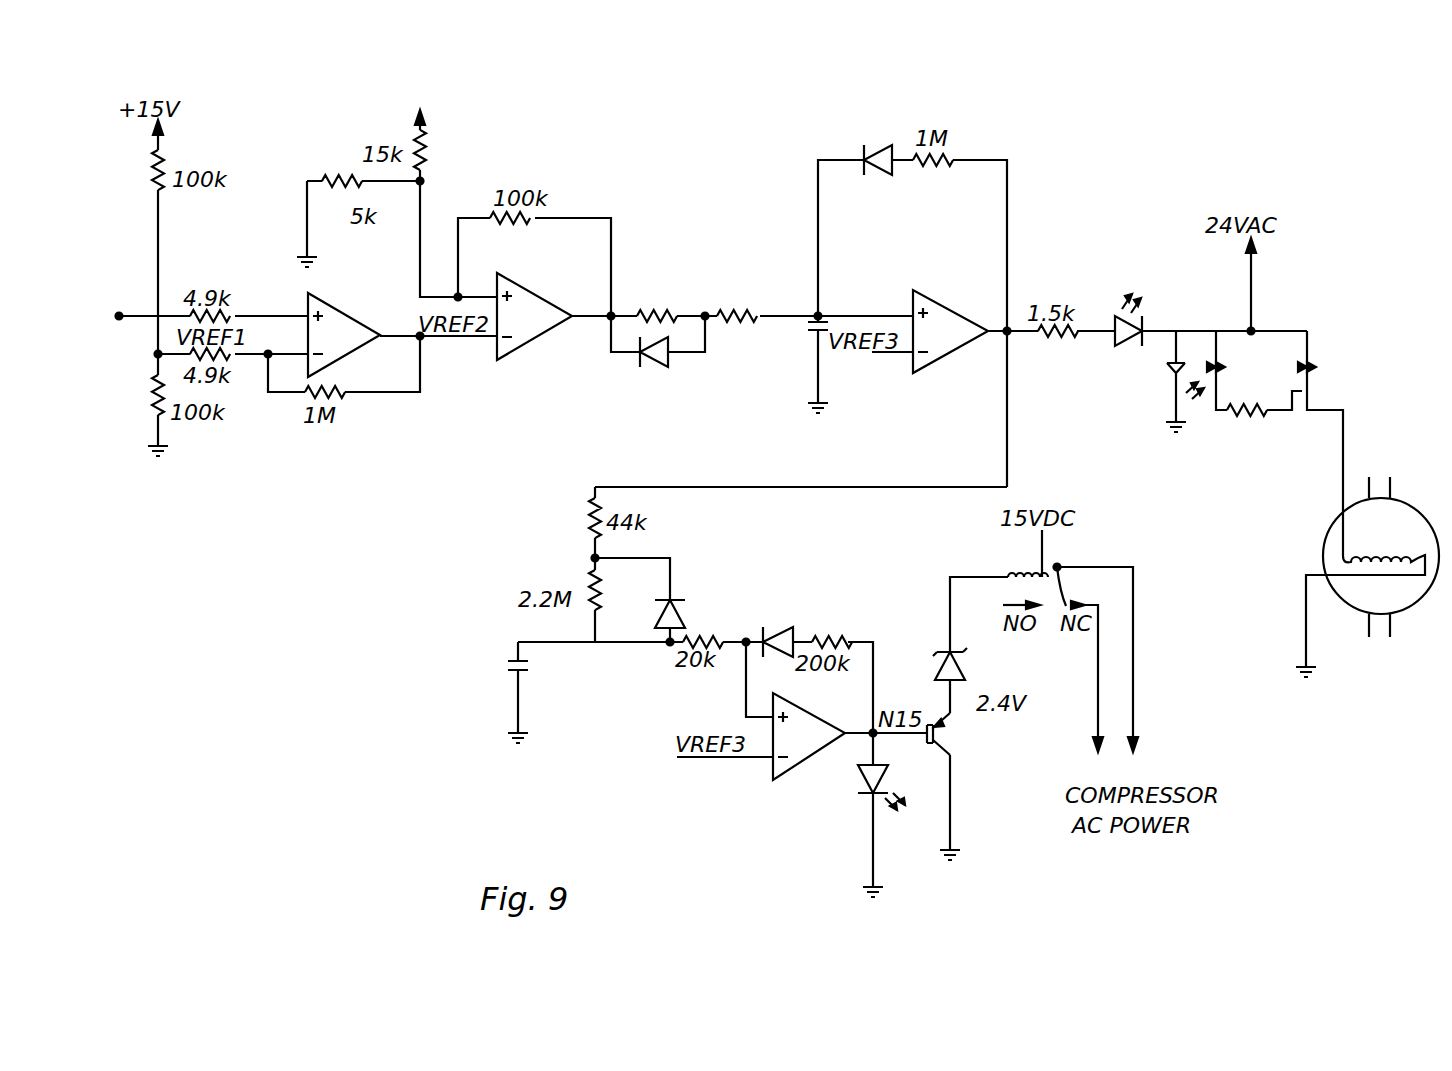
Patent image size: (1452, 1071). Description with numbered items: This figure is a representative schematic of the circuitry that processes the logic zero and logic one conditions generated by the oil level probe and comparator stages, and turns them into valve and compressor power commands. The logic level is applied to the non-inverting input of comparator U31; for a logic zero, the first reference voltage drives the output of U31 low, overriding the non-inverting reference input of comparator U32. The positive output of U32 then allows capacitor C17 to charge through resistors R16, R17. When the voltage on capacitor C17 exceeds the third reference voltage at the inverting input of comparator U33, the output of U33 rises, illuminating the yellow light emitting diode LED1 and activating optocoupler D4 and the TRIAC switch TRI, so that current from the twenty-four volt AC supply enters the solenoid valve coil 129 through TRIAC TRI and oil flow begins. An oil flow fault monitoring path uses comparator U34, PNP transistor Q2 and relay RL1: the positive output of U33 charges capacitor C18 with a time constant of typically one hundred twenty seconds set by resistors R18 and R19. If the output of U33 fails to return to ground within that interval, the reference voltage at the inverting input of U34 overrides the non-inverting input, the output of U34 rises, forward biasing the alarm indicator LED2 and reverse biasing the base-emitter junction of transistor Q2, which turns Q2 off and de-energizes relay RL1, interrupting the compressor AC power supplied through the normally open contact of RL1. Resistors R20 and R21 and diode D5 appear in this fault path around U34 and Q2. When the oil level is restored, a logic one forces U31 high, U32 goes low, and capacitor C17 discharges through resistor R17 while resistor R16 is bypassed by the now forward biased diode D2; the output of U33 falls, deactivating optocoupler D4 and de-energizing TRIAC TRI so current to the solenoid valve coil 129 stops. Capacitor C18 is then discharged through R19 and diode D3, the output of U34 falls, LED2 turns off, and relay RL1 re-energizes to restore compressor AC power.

The solenoid valve coil 129 is at (1367, 577).
The comparator U31 is at (348, 327).
The comparator U32 is at (547, 316).
The comparator U33 is at (930, 325).
The comparator U34 is at (818, 736).
The resistor R16 is at (649, 289).
The resistor R17 is at (736, 289).
The resistor R18 is at (563, 606).
The resistor R19 is at (568, 518).
The resistor R20 is at (709, 627).
The resistor R21 is at (829, 625).
The diode D2 is at (651, 369).
The diode D3 is at (681, 599).
The optocoupler D4 is at (1189, 381).
The zener diode D5 is at (972, 666).
The capacitor C17 is at (784, 364).
The capacitor C18 is at (476, 692).
The yellow light emitting diode LED1 is at (1103, 343).
The alarm indicator LED2 is at (896, 810).
The PNP transistor Q2 is at (961, 744).
The relay RL1 is at (1002, 563).
The TRIAC TRI is at (1286, 443).